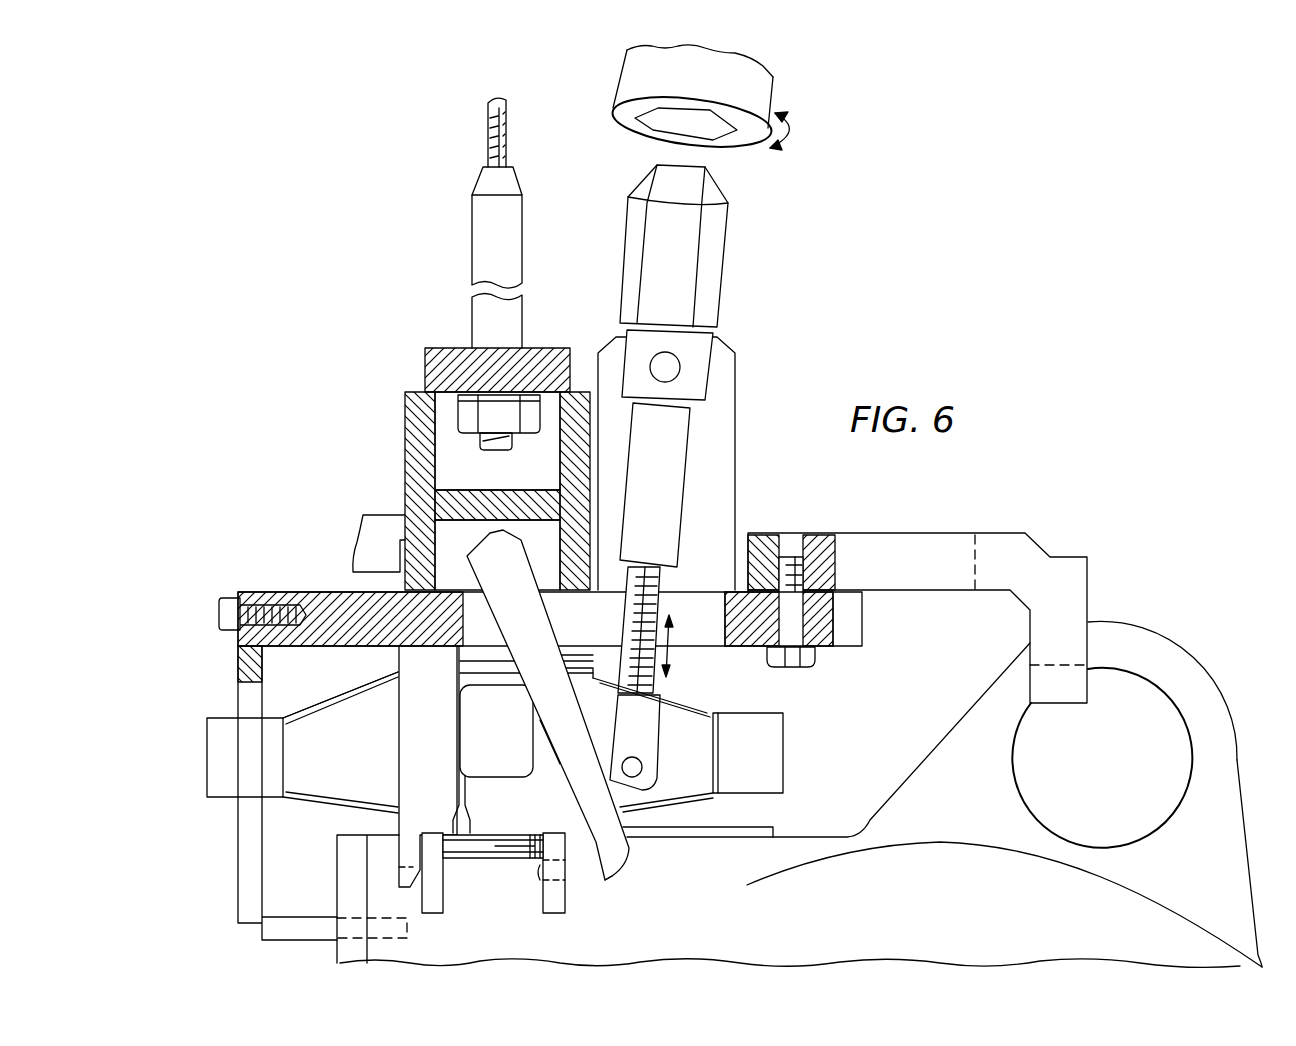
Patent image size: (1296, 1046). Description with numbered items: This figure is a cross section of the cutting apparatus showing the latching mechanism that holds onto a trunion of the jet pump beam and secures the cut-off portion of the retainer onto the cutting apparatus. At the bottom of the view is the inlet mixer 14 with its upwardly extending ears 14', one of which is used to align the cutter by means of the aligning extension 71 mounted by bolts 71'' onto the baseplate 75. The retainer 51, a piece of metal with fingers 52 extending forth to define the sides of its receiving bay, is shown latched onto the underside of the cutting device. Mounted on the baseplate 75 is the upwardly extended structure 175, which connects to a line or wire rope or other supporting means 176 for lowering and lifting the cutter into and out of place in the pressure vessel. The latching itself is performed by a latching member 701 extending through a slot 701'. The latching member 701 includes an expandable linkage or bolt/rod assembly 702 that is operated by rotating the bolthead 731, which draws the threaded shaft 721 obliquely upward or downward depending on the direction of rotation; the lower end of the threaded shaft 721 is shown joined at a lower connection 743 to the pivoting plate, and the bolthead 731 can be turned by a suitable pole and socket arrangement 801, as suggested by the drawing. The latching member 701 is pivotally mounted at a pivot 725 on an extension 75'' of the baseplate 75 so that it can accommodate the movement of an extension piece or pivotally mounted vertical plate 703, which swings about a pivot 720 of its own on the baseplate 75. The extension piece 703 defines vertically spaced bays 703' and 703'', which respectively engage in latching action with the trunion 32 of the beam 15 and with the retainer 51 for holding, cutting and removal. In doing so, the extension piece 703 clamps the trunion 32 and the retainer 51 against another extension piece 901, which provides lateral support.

The inlet mixer 14 is at (801, 805).
The ears of the inlet mixer 14' is at (1145, 734).
The beam 15 is at (343, 758).
The trunion 32 is at (503, 735).
The retainer 51 is at (551, 834).
The fingers 52 is at (553, 903).
The aligning extension 71 is at (947, 594).
The bolts 71'' is at (817, 629).
The baseplate 75 is at (540, 727).
The extension of the baseplate 75'' is at (699, 463).
The upwardly extended structure 175 is at (472, 238).
The supporting means 176 is at (478, 136).
The latching member 701 is at (702, 480).
The slot 701' is at (655, 661).
The expandable linkage 702 is at (675, 491).
The extension piece 703 is at (548, 705).
The bay 703' is at (561, 757).
The bay 703'' is at (619, 872).
The pivot 720 is at (505, 554).
The threaded shaft 721 is at (630, 617).
The pivot 725 is at (688, 368).
The bolthead 731 is at (720, 241).
The lower pivot block 743 is at (648, 766).
The pole/socket arrangement 801 is at (775, 82).
The extension piece 901 is at (397, 738).